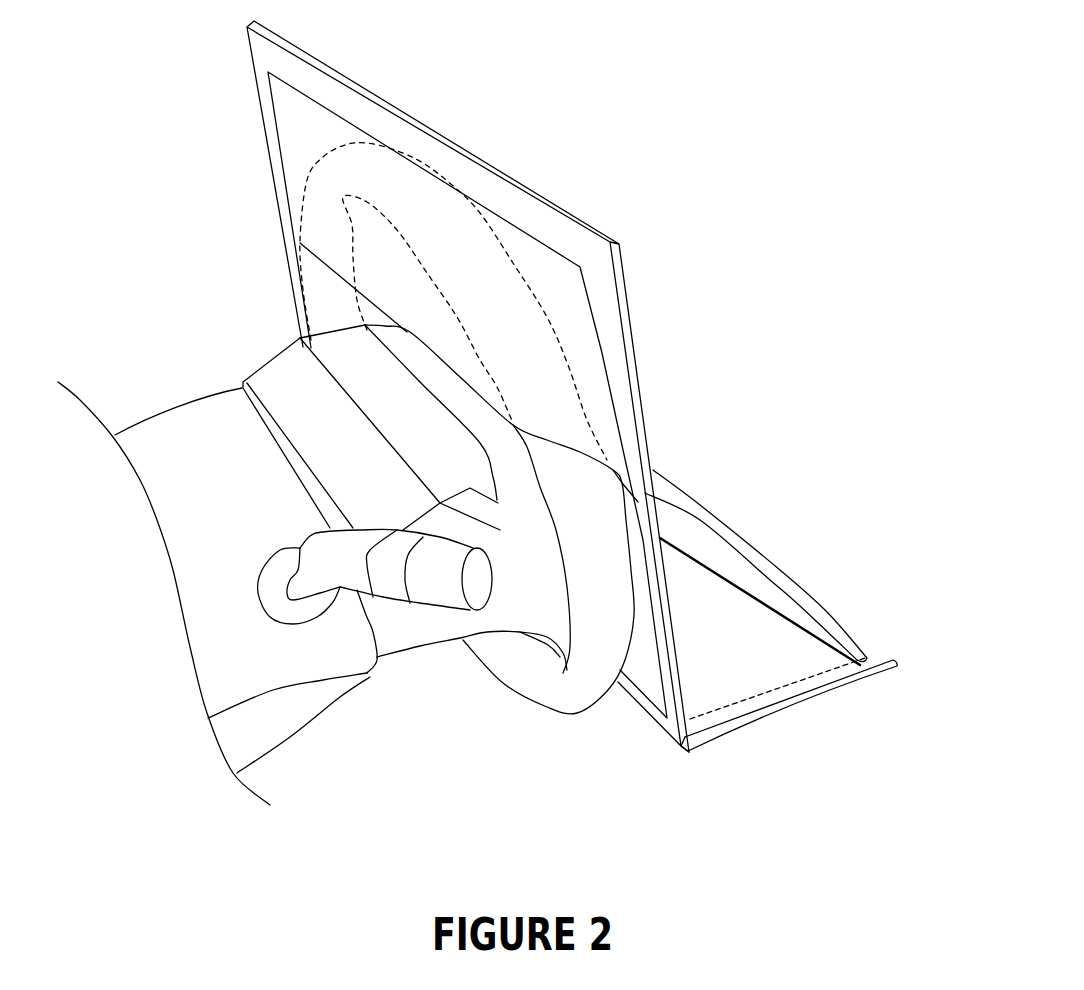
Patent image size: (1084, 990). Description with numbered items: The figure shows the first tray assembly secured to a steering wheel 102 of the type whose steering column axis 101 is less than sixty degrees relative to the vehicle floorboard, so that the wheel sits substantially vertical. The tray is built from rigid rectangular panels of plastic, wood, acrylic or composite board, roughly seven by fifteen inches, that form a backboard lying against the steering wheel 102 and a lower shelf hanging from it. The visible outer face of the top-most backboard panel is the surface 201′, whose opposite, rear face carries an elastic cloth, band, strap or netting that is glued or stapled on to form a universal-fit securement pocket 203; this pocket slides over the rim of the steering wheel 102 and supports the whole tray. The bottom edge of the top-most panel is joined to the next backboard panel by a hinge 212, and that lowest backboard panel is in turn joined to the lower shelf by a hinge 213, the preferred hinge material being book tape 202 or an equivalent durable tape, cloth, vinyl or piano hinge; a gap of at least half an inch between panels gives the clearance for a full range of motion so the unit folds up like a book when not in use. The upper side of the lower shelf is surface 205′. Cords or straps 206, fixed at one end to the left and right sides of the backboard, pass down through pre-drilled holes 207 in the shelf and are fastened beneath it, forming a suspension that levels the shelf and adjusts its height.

The steering column axis 101 is at (177, 508).
The steering wheel 102 is at (433, 499).
The top-most panel front side 201′ is at (507, 175).
The book tape 202 is at (583, 252).
The securement pocket 203 is at (393, 307).
The lower shelf top side 205′ is at (705, 555).
The cords or straps 206 is at (773, 613).
The pre-drilled holes 207 is at (858, 665).
The hinge 212 is at (643, 495).
The hinge 213 is at (680, 748).